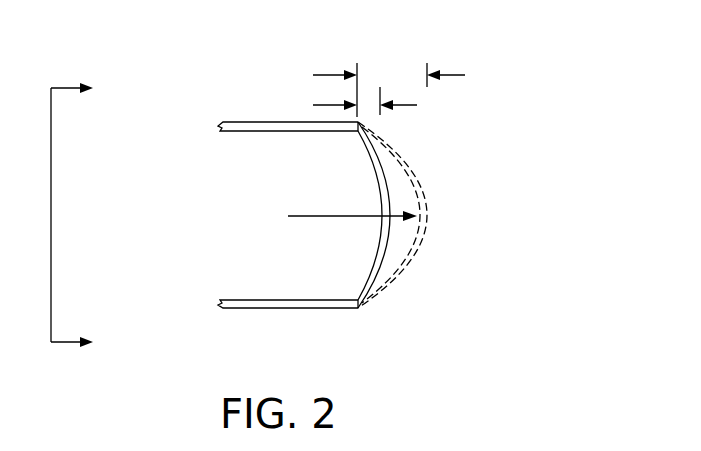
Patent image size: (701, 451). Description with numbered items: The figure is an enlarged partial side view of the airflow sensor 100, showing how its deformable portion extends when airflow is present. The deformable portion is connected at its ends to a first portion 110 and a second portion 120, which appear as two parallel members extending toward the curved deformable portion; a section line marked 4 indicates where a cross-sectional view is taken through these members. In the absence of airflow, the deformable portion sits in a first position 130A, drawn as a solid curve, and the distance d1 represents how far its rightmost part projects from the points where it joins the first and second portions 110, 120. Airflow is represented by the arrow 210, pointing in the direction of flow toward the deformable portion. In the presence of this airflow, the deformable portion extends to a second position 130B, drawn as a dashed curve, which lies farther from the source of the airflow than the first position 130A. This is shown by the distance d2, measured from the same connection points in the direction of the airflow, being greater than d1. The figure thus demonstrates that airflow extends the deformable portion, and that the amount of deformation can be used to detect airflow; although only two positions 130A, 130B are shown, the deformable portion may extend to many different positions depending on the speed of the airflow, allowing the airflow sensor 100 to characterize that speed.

The section line 4- 4 is at (85, 216).
The airflow sensor 100 is at (533, 99).
The first portion 110 is at (257, 120).
The second portion 120 is at (288, 309).
The first position 130A is at (380, 182).
The second position 130B is at (422, 188).
The arrow 210 is at (332, 217).
The distance d1 is at (365, 101).
The distance d2 is at (389, 89).